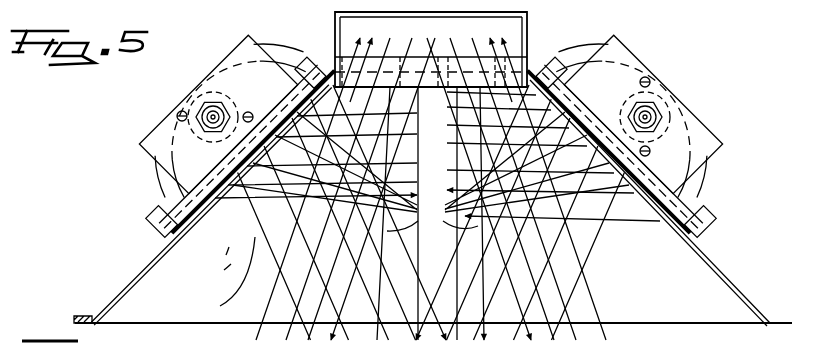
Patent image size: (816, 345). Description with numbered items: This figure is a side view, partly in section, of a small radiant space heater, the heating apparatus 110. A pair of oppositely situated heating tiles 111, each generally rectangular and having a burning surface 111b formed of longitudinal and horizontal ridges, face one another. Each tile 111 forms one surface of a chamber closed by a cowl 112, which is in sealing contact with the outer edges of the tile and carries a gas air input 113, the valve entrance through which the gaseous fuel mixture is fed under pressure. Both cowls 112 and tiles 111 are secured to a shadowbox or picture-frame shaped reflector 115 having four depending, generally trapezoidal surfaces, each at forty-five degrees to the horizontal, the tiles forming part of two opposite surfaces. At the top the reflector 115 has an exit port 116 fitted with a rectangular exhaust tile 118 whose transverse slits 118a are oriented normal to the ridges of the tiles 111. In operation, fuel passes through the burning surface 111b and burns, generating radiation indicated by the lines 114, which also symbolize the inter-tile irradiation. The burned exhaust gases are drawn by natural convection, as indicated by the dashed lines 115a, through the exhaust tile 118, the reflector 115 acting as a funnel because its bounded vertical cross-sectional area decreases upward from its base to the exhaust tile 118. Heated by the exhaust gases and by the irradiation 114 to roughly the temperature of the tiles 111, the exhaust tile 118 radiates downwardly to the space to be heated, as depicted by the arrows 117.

The heating apparatus 110 is at (754, 177).
The heating tiles 111 is at (296, 94).
The burning surface 111b is at (233, 238).
The cowl 112 is at (192, 105).
The gas air input 113 is at (213, 112).
The radiation lines 114 is at (237, 267).
The reflector 115 is at (717, 255).
The dashed lines 115a is at (219, 277).
The exit port 116 is at (567, 40).
The arrows 117 is at (518, 213).
The exhaust tile 118 is at (478, 72).
The transverse slits 118a is at (530, 58).